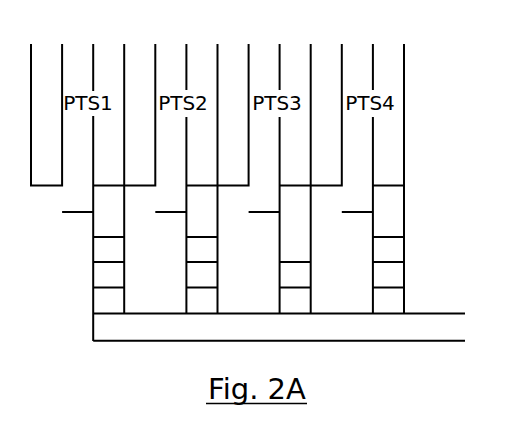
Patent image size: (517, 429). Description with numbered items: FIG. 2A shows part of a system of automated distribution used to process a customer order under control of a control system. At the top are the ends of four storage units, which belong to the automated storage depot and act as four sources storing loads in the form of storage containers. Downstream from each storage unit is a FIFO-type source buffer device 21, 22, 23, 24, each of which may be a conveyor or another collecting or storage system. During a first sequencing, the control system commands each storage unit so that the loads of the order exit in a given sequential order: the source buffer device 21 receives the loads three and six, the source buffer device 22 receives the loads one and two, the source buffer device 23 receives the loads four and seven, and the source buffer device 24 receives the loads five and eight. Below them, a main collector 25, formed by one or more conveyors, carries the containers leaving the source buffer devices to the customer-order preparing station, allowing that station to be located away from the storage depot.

The source buffer device 21 is at (108, 214).
The source buffer device 22 is at (202, 214).
The source buffer device 23 is at (298, 214).
The source buffer device 24 is at (389, 214).
The main collector 25 is at (110, 325).